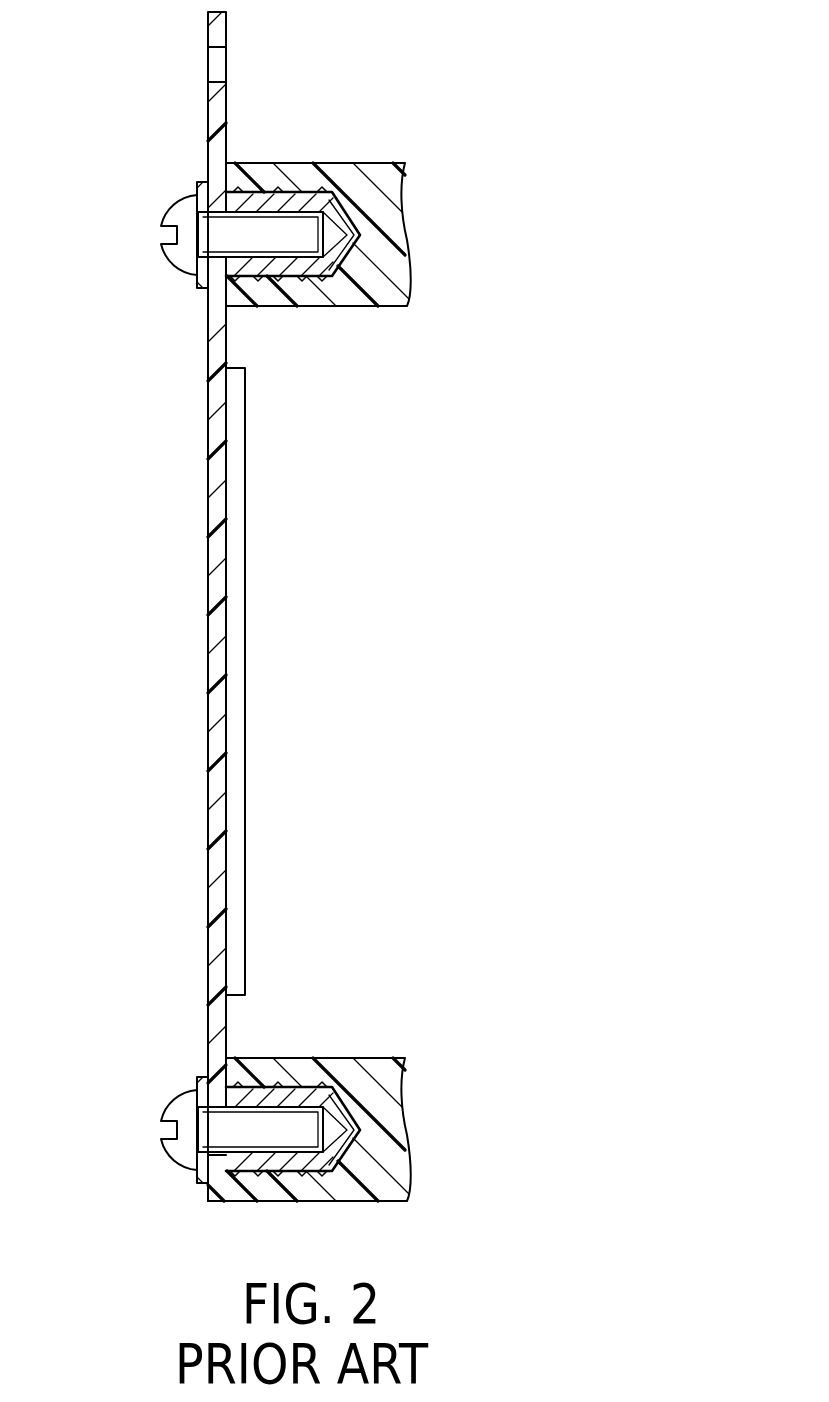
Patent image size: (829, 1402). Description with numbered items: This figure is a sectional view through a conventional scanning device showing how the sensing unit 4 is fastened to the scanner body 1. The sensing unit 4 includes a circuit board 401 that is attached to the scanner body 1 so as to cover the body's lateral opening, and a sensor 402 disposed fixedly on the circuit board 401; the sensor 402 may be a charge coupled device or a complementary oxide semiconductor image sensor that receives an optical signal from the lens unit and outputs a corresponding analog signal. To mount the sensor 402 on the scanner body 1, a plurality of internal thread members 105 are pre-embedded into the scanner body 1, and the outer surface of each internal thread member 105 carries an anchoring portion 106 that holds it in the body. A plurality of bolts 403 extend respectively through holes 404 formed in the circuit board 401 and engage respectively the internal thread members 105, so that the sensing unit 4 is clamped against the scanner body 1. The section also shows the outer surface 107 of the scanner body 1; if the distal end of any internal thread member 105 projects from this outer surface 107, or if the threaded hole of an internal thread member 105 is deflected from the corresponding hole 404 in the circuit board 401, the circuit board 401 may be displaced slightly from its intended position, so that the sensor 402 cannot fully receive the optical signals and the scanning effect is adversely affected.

The scanner body 1 is at (283, 1104).
The sensing unit 4 is at (156, 559).
The circuit board 401 is at (212, 668).
The sensor 402 is at (237, 758).
The bolt 403 is at (190, 1090).
The hole 404 is at (217, 182).
The internal thread member 105 is at (340, 1088).
The anchoring portion 106 is at (297, 1087).
The outer surface 107 is at (207, 1193).